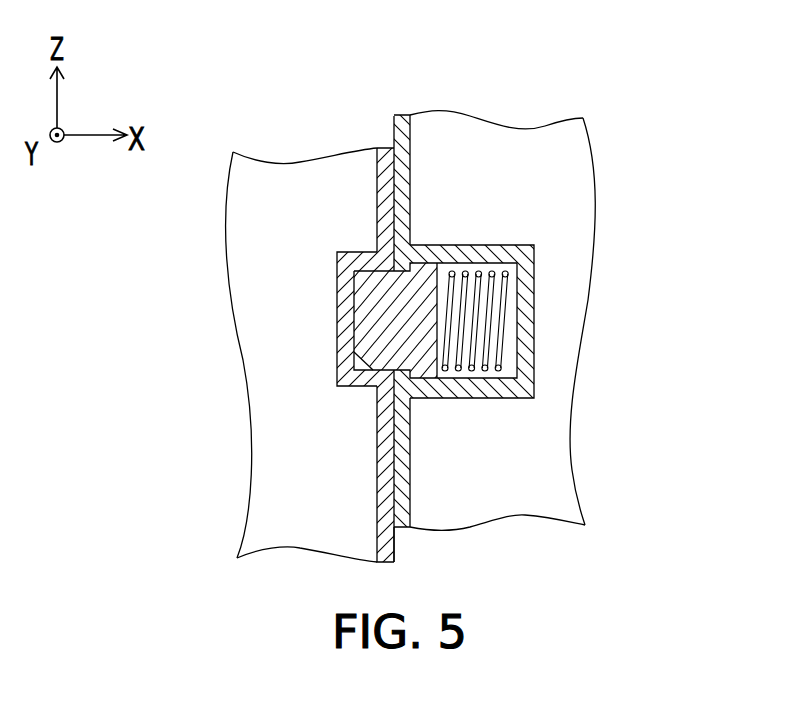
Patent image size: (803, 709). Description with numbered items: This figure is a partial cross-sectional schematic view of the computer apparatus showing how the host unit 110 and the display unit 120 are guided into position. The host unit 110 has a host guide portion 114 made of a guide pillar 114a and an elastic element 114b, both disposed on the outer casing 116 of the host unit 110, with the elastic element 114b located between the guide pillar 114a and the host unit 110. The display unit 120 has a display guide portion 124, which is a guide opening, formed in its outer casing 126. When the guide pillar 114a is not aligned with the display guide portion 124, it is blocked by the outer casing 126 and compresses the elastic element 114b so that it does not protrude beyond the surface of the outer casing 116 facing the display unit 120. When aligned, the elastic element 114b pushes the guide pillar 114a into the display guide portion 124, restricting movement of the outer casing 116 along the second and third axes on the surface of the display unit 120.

The host unit 110 is at (560, 382).
The host guide portion 114 is at (679, 205).
The guide pillar 114a is at (421, 274).
The elastic element 114b is at (509, 275).
The outer casing 116 is at (406, 440).
The display unit 120 is at (288, 362).
The display guide portion 124 is at (361, 363).
The outer casing 126 is at (384, 472).